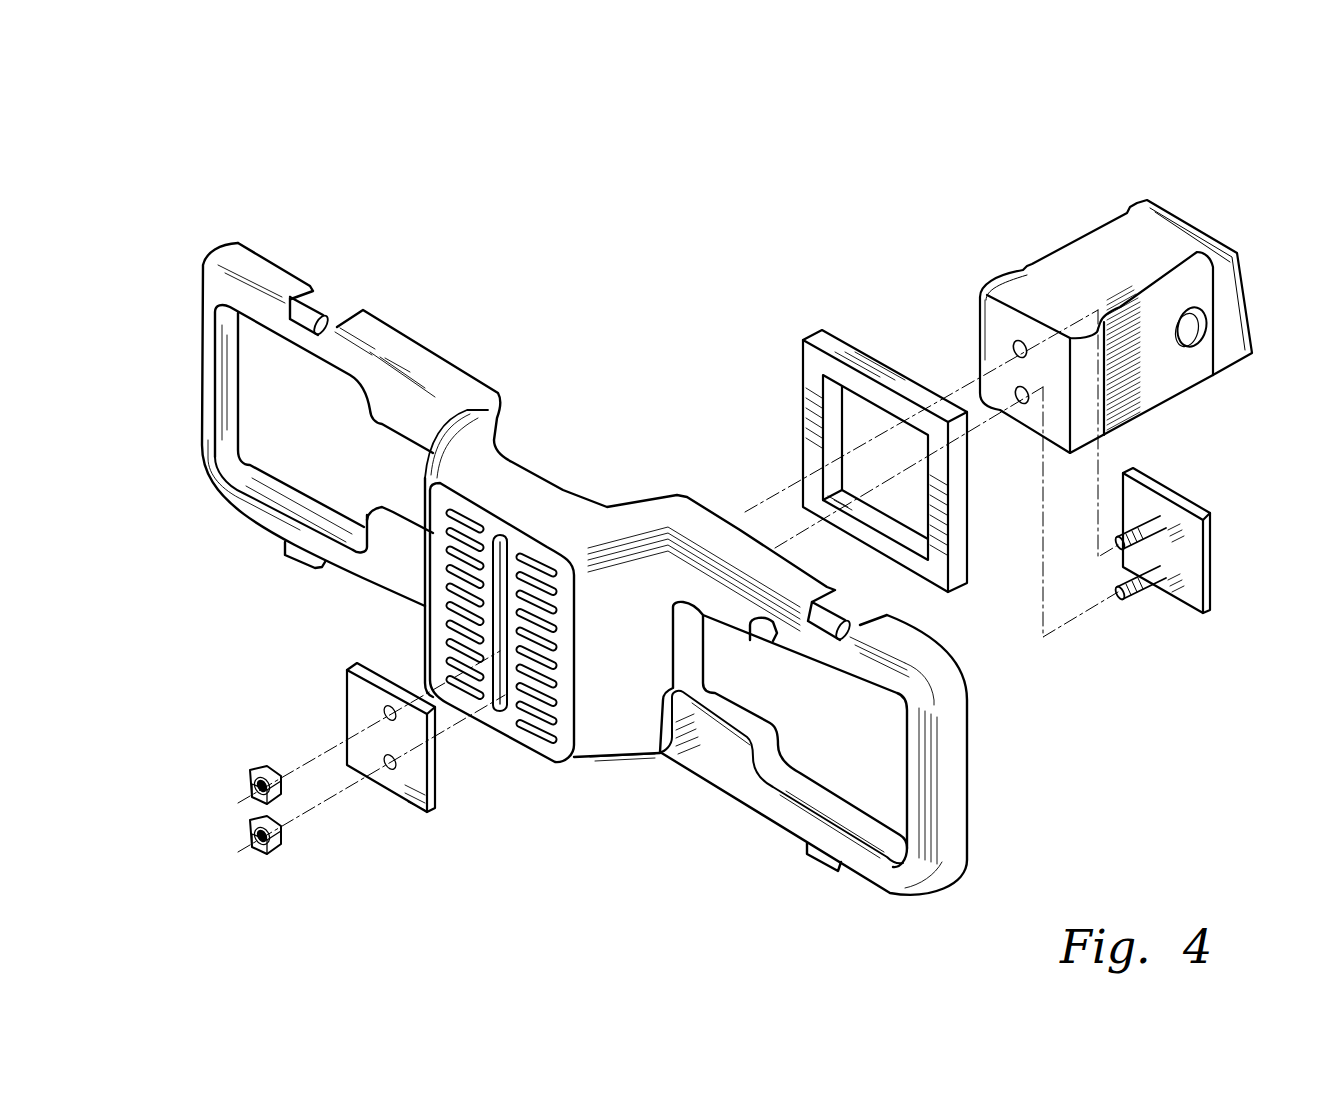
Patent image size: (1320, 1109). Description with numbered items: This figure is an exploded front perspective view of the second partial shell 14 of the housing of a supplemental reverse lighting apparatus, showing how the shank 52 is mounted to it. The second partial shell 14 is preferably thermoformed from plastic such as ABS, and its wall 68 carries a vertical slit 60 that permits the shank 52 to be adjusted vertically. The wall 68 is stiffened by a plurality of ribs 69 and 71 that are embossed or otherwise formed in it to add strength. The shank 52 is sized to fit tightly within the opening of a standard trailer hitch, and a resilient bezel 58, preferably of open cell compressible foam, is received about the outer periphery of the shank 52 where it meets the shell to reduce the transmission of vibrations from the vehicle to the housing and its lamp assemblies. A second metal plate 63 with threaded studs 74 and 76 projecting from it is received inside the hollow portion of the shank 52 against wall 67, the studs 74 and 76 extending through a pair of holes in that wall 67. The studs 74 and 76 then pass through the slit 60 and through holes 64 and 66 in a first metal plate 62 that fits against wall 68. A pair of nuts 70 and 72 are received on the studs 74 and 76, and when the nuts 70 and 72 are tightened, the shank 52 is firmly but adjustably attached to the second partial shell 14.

The second partial shell 14 is at (888, 878).
The shank 52 is at (1170, 363).
The resilient bezel 58 is at (955, 548).
The vertical slit 60 is at (503, 557).
The first metal plate 62 is at (386, 748).
The second metal plate 63 is at (1204, 578).
The hole 64 is at (385, 713).
The hole 66 is at (395, 768).
The wall 67 is at (1113, 267).
The wall 68 is at (577, 746).
The ribs 69 is at (560, 728).
The nut 70 is at (255, 768).
The ribs 71 is at (463, 608).
The nut 72 is at (281, 847).
The threaded stud 74 is at (1123, 540).
The threaded stud 76 is at (1137, 600).